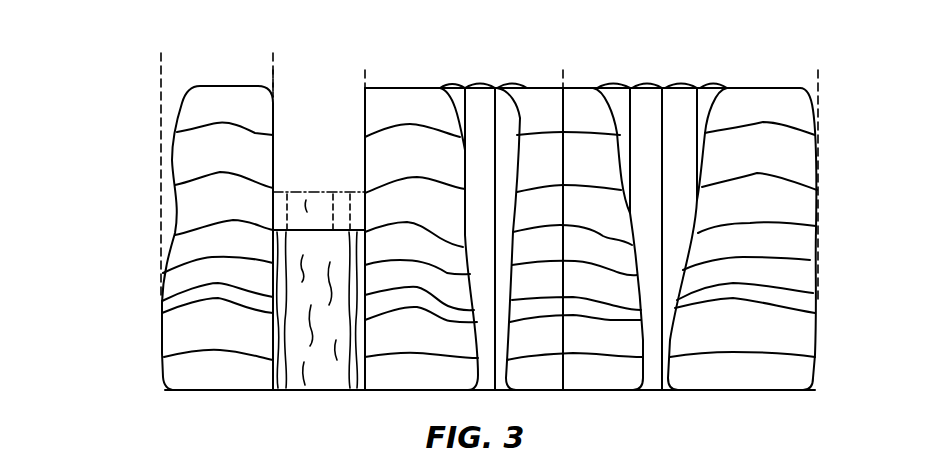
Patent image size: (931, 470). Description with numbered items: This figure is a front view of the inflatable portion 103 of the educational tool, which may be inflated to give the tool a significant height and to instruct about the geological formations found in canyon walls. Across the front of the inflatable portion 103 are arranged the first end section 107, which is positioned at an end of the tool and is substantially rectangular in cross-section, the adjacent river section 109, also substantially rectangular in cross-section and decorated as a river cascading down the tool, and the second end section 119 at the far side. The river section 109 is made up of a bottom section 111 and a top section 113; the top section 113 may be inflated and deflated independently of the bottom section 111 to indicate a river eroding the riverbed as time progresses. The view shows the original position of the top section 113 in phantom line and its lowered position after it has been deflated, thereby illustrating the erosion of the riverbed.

The inflatable portion 103 is at (118, 71).
The first end section 107 is at (160, 53).
The river section 109 is at (273, 70).
The bottom section 111 is at (321, 393).
The top section 113 is at (318, 191).
The second end section 119 is at (563, 70).